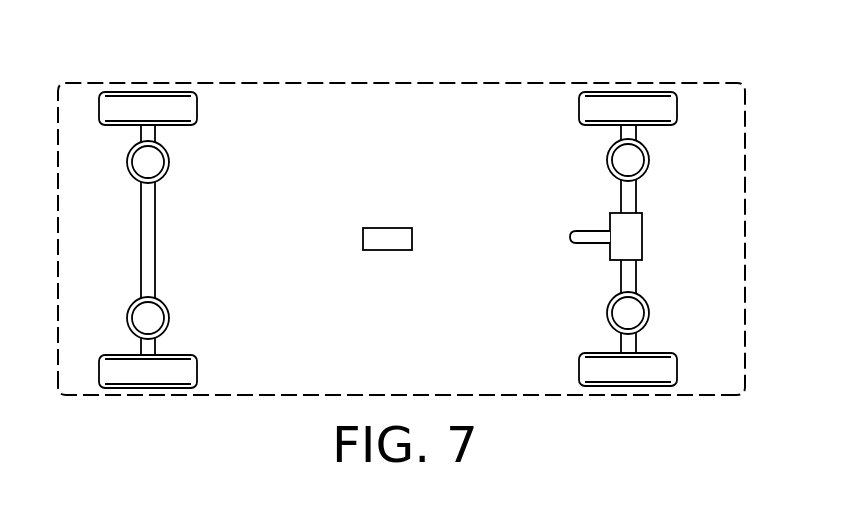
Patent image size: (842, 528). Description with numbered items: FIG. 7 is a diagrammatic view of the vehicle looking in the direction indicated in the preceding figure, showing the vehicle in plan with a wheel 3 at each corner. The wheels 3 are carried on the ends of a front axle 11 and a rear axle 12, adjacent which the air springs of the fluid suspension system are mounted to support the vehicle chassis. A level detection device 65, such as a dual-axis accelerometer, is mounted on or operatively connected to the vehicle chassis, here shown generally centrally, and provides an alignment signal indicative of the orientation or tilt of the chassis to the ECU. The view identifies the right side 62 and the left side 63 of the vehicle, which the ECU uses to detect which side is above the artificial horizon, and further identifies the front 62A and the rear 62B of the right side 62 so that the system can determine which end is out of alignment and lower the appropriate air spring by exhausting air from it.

The wheels 3 is at (190, 112).
The front axle 11 is at (158, 213).
The rear axle 12 is at (638, 200).
The right side 62 is at (360, 82).
The front 62A is at (132, 188).
The rear 62B is at (612, 186).
The left side 63 is at (533, 396).
The level detection device 65 is at (383, 238).